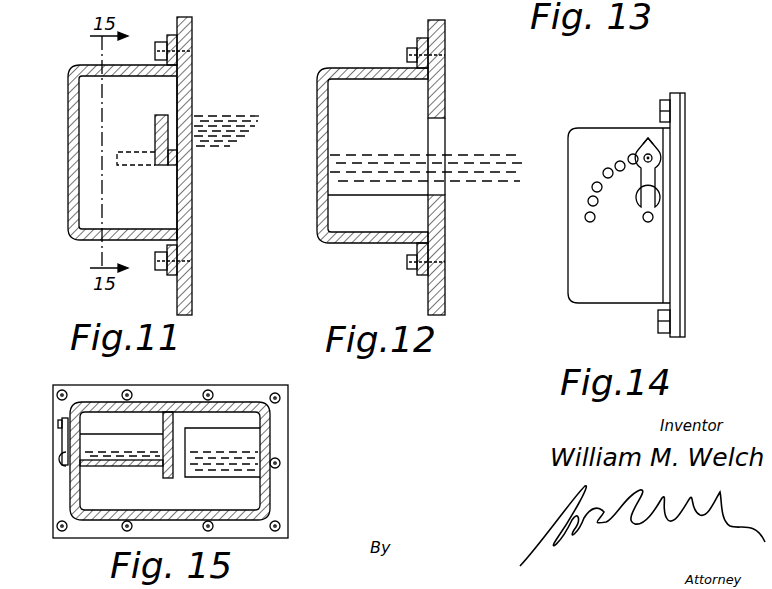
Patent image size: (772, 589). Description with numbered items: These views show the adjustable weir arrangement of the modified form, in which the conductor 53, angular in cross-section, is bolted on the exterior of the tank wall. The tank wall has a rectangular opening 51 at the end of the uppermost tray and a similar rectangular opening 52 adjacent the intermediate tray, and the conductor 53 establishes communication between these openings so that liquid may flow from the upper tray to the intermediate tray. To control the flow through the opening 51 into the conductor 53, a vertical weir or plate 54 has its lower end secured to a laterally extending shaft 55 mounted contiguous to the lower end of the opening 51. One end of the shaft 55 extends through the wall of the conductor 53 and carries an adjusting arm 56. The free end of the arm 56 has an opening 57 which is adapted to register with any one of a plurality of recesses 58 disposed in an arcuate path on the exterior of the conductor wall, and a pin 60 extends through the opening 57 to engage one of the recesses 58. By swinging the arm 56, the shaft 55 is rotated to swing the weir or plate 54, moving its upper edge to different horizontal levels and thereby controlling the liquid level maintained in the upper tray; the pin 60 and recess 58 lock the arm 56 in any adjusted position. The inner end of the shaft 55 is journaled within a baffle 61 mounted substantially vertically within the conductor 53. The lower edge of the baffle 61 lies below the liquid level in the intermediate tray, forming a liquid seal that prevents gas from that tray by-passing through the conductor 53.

In FIG. 11, the rectangular opening 51 is at (190, 80).
In FIG. 15, the rectangular opening 51 is at (158, 425).
In FIG. 12, the rectangular opening 52 is at (440, 128).
In FIG. 15, the rectangular opening 52 is at (248, 429).
In FIG. 11, the conductor 53 is at (68, 142).
In FIG. 12, the conductor 53 is at (317, 180).
In FIG. 15, the conductor 53 is at (240, 405).
In FIG. 11, the weir or plate 54 is at (155, 128).
In FIG. 14, the shaft 55 is at (656, 215).
In FIG. 14, the adjusting arm 56 is at (650, 183).
In FIG. 14, the opening 57 is at (660, 150).
In FIG. 14, the recesses 58 is at (605, 168).
In FIG. 14, the pin 60 is at (646, 150).
In FIG. 12, the baffle 61 is at (355, 133).
In FIG. 15, the baffle 61 is at (172, 428).